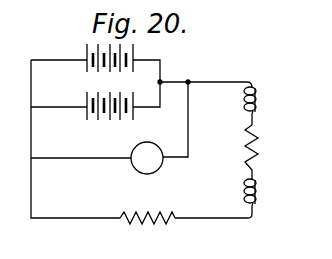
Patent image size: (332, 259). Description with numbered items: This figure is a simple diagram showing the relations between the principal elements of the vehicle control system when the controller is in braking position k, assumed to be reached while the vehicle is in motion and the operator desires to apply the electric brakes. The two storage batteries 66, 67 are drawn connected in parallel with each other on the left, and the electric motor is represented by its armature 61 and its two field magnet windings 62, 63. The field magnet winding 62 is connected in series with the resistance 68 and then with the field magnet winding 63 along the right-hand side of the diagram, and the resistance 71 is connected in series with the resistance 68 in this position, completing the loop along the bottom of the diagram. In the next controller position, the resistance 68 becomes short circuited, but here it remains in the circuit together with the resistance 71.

The storage battery 66 is at (84, 52).
The storage battery 67 is at (84, 97).
The armature 61 is at (133, 148).
The field magnet winding 62 is at (257, 96).
The resistance section 68 is at (258, 146).
The field magnet winding 63 is at (257, 191).
The resistance 71 is at (160, 206).